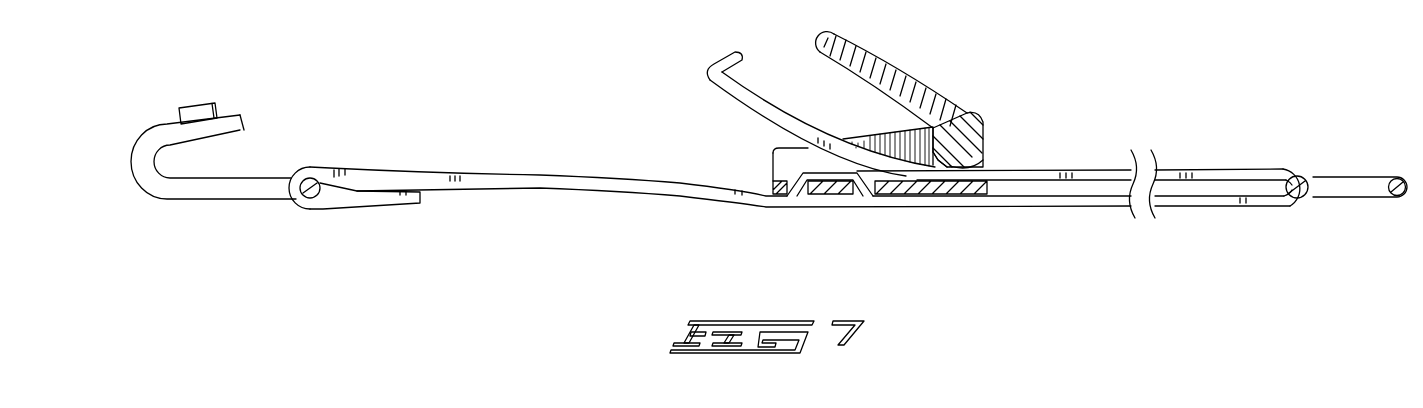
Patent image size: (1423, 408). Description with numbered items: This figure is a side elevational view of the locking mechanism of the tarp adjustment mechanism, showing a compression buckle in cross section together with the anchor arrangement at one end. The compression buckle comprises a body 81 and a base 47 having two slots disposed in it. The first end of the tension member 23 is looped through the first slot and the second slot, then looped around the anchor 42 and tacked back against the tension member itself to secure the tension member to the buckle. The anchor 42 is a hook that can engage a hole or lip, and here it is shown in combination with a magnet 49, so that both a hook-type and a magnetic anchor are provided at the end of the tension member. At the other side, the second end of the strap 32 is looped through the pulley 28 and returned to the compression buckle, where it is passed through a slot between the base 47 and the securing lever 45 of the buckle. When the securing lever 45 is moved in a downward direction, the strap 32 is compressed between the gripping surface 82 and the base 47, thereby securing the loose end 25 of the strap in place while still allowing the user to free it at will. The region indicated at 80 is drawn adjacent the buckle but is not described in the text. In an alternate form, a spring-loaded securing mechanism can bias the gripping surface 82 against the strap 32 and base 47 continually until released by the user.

The tension member 23 is at (508, 172).
The loose end 25 is at (752, 110).
The pulley 28 is at (1357, 175).
The strap 32 is at (1075, 167).
The anchor 42 is at (222, 203).
The securing lever 45 is at (870, 63).
The base 47 is at (957, 197).
The magnet 49 is at (200, 105).
The cam surface 80 is at (853, 132).
The body 81 is at (977, 115).
The gripping surface 82 is at (937, 158).